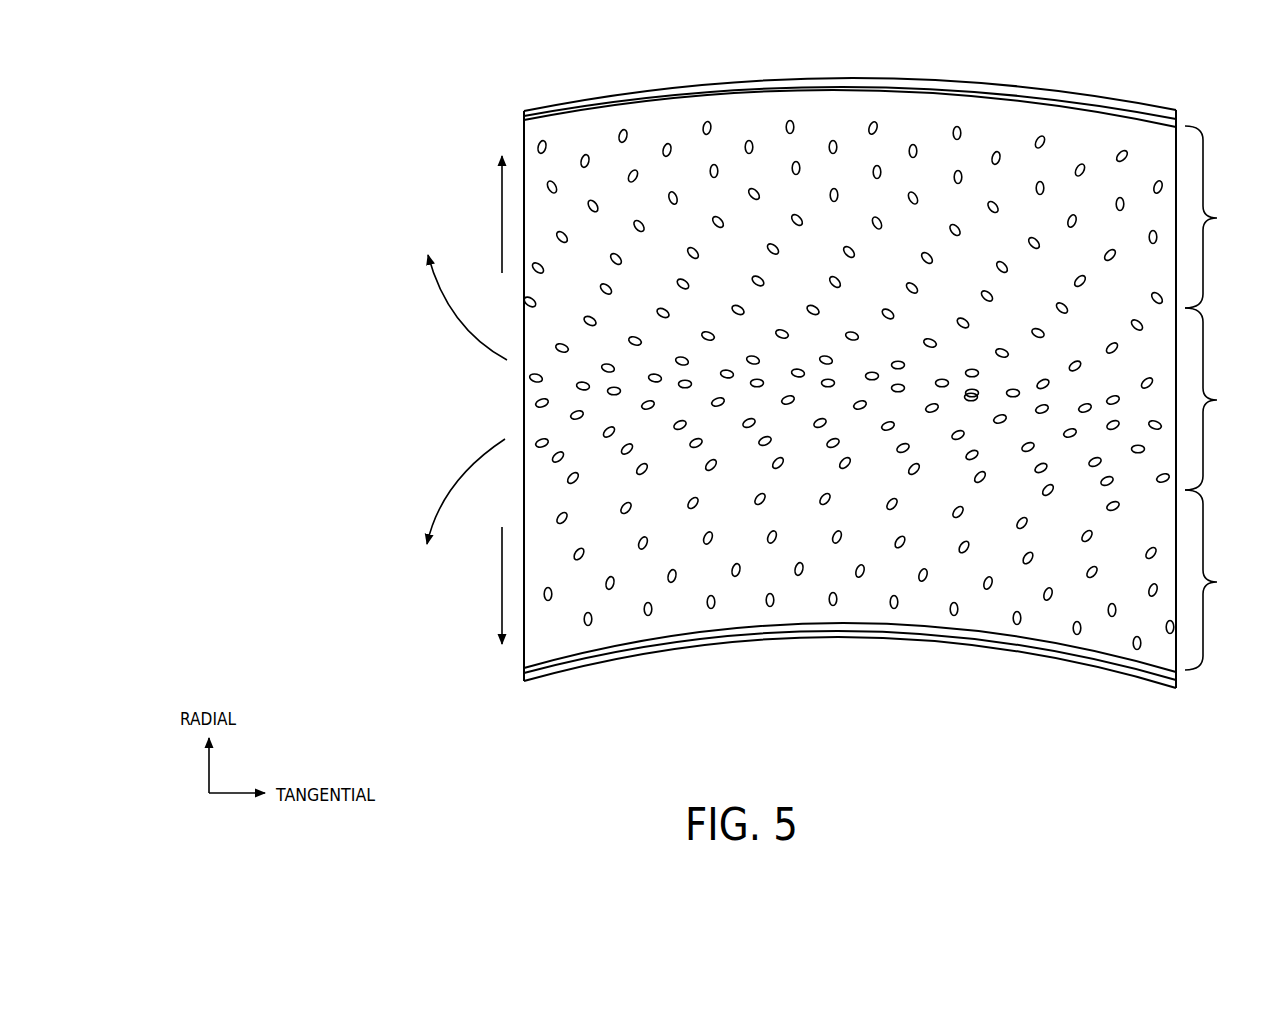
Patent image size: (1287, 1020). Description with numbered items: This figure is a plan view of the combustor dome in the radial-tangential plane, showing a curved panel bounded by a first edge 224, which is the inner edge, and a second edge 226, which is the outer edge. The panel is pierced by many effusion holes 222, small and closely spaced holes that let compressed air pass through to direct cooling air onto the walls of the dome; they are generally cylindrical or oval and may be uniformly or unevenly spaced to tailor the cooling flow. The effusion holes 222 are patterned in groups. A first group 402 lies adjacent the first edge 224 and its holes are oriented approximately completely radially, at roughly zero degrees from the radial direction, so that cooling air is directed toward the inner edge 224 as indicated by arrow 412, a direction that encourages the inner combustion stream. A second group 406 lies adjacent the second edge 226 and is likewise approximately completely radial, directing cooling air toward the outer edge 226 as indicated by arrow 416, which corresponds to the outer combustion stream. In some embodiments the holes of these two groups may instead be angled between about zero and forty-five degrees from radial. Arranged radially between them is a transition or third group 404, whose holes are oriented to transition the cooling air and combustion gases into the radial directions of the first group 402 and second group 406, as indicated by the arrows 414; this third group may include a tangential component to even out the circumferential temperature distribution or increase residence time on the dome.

The effusion holes 222 is at (1127, 150).
The first edge 224 is at (1086, 669).
The second edge 226 is at (1053, 91).
The first group 402 is at (1225, 580).
The third group 404 is at (1225, 399).
The second group 406 is at (1225, 217).
The arrow 412 is at (500, 584).
The arrows 414 is at (454, 318).
The arrow 416 is at (500, 200).